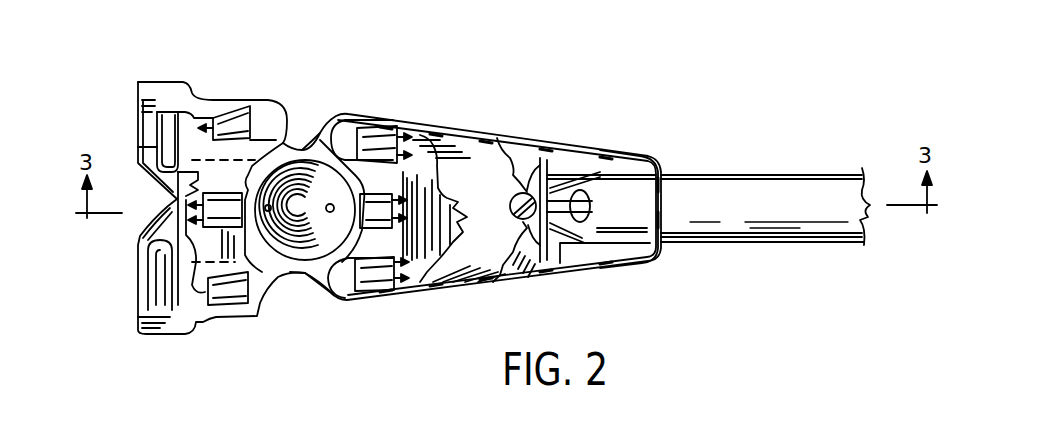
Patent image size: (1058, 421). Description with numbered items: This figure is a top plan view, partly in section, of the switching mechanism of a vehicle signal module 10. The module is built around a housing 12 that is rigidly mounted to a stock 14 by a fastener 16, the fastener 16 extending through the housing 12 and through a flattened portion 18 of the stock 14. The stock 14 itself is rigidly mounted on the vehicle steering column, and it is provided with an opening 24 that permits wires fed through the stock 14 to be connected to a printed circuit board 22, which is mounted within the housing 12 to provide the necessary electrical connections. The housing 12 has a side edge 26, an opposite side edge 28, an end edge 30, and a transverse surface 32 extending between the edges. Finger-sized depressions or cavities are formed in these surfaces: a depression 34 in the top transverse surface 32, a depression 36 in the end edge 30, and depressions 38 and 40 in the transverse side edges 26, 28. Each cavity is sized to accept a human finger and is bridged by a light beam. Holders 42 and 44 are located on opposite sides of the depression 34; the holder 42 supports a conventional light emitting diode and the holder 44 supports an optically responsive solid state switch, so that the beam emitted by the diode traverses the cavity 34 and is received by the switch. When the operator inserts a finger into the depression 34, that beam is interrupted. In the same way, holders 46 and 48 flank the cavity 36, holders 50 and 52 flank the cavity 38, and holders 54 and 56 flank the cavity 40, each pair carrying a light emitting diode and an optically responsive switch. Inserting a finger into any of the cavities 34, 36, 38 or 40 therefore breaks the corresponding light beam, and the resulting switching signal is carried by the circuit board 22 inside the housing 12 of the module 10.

The vehicle signal module 10 is at (708, 140).
The housing 12 is at (603, 148).
The stock 14 is at (753, 224).
The fastener 16 is at (524, 192).
The flattened portion 18 is at (562, 267).
The printed circuit board 22 is at (425, 150).
The opening 24 is at (590, 196).
The side edge 26 is at (380, 120).
The opposite side edge 28 is at (379, 300).
The end edge 30 is at (138, 108).
The transverse surface 32 is at (472, 160).
The depression 34 is at (302, 148).
The depression 36 is at (307, 276).
The depression 38 is at (170, 210).
The depression 40 is at (300, 235).
The holder 42 is at (391, 147).
The holder 44 is at (243, 122).
The holder 46 is at (410, 293).
The holder 48 is at (233, 292).
The holder 50 is at (160, 136).
The holder 52 is at (165, 277).
The holder 54 is at (217, 200).
The holder 56 is at (394, 222).